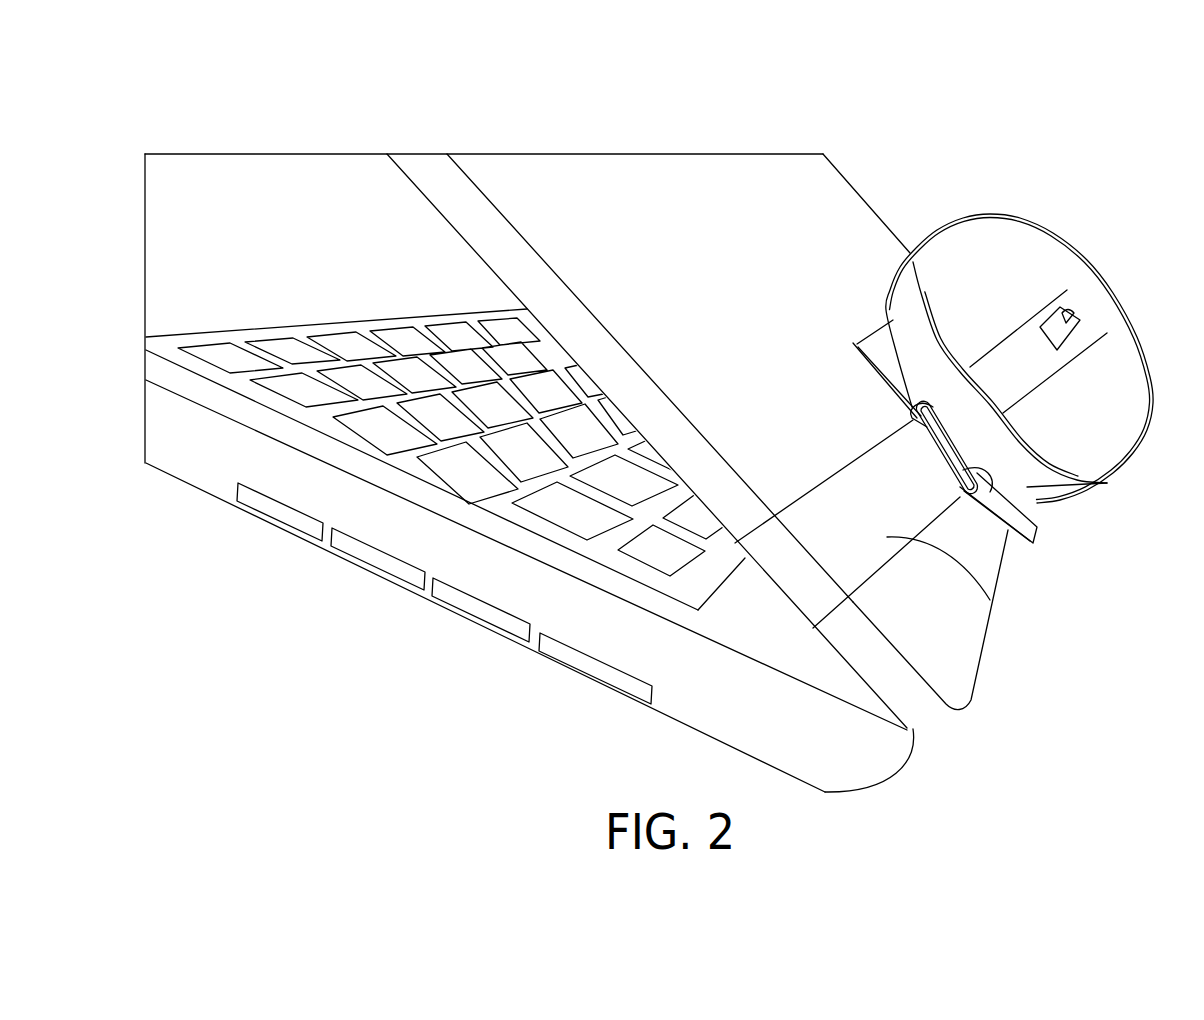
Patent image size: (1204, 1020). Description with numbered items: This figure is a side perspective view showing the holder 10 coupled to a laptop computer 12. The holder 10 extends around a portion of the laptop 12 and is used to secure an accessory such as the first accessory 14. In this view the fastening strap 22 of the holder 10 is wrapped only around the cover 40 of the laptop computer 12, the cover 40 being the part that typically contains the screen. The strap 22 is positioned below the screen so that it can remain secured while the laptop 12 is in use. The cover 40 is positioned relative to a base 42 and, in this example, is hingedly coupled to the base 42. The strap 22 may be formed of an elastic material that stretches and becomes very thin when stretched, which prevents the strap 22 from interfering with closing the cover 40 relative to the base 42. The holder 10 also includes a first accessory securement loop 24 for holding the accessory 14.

The holder 10 is at (1024, 361).
The laptop computer 12 is at (840, 174).
The first accessory 14 is at (1103, 445).
The fastening strap 22 is at (990, 600).
The first accessory securement loop 24 is at (1033, 235).
The cover 40 is at (953, 693).
The base 42 is at (862, 765).